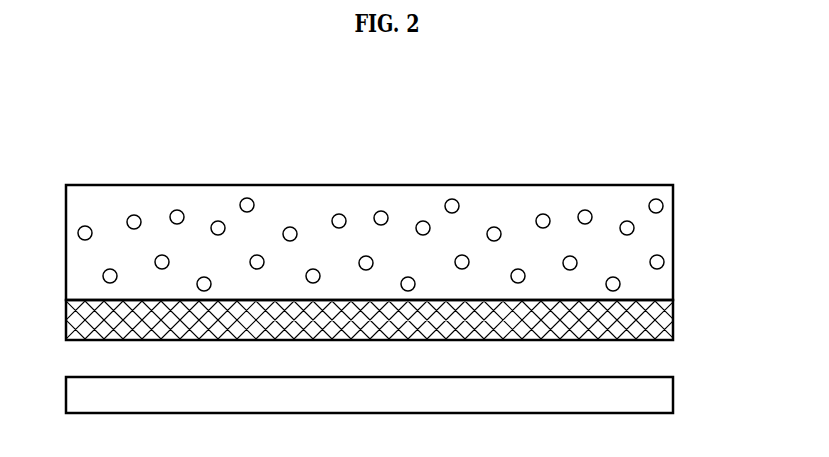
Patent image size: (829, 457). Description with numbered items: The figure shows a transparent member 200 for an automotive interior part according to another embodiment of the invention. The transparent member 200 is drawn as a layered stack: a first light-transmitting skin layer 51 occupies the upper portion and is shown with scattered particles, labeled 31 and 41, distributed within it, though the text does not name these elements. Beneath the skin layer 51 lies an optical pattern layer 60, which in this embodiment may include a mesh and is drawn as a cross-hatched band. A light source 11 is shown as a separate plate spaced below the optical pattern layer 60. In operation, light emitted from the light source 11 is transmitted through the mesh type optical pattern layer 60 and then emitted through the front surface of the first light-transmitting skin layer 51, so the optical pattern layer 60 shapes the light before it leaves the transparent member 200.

The transparent member 200 is at (60, 80).
The first light-transmitting skin layer 51 is at (695, 132).
The resin layer / matrix 31 is at (617, 205).
The phosphor particles 41 is at (657, 200).
The optical pattern layer 60 is at (661, 322).
The light source 11 is at (660, 395).